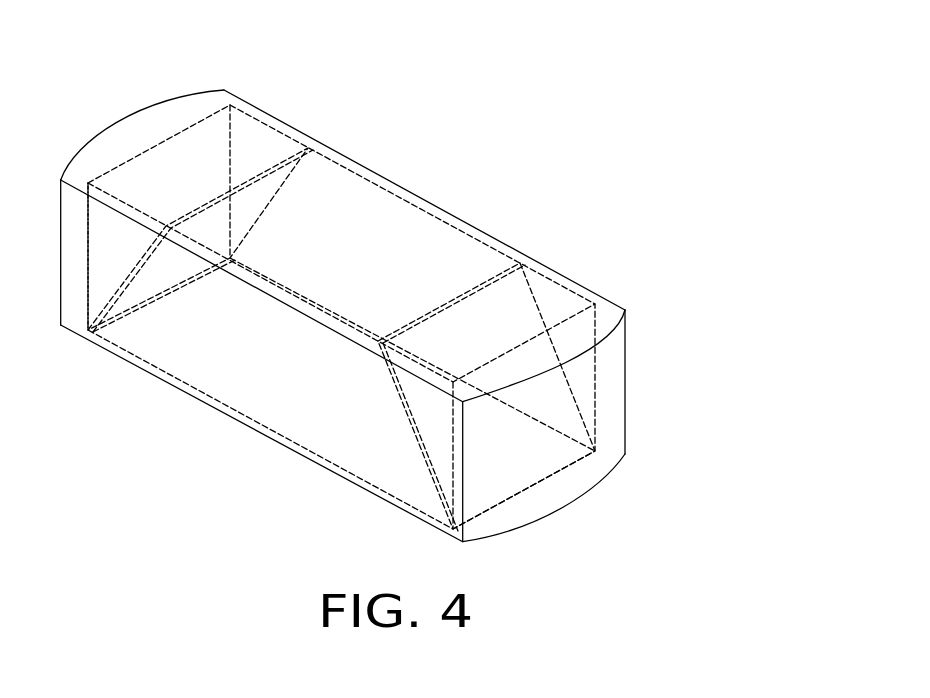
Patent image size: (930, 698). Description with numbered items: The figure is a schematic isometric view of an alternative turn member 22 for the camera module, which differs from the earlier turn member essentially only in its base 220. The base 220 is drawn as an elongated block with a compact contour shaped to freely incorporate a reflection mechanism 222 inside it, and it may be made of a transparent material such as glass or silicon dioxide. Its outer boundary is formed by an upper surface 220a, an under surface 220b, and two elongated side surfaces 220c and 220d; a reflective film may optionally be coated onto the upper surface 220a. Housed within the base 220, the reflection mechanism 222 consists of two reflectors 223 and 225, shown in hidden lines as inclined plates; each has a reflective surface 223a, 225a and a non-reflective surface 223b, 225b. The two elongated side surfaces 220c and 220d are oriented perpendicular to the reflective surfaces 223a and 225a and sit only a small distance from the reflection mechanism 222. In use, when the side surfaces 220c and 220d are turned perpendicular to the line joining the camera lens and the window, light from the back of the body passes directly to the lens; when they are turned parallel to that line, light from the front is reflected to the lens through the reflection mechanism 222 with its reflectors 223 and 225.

The turn member 22 is at (368, 30).
The base 220 is at (757, 272).
The upper surface 220a is at (603, 313).
The under surface 220b is at (634, 467).
The elongated side surface 220c is at (387, 477).
The elongated side surface 220d is at (636, 380).
The reflection mechanism 222 is at (585, 103).
The reflector 223 is at (500, 88).
The reflective surface 223a is at (253, 197).
The non-reflective surface 223b is at (259, 163).
The reflector 225 is at (577, 187).
The reflective surface 225a is at (449, 289).
The non-reflective surface 225b is at (497, 312).